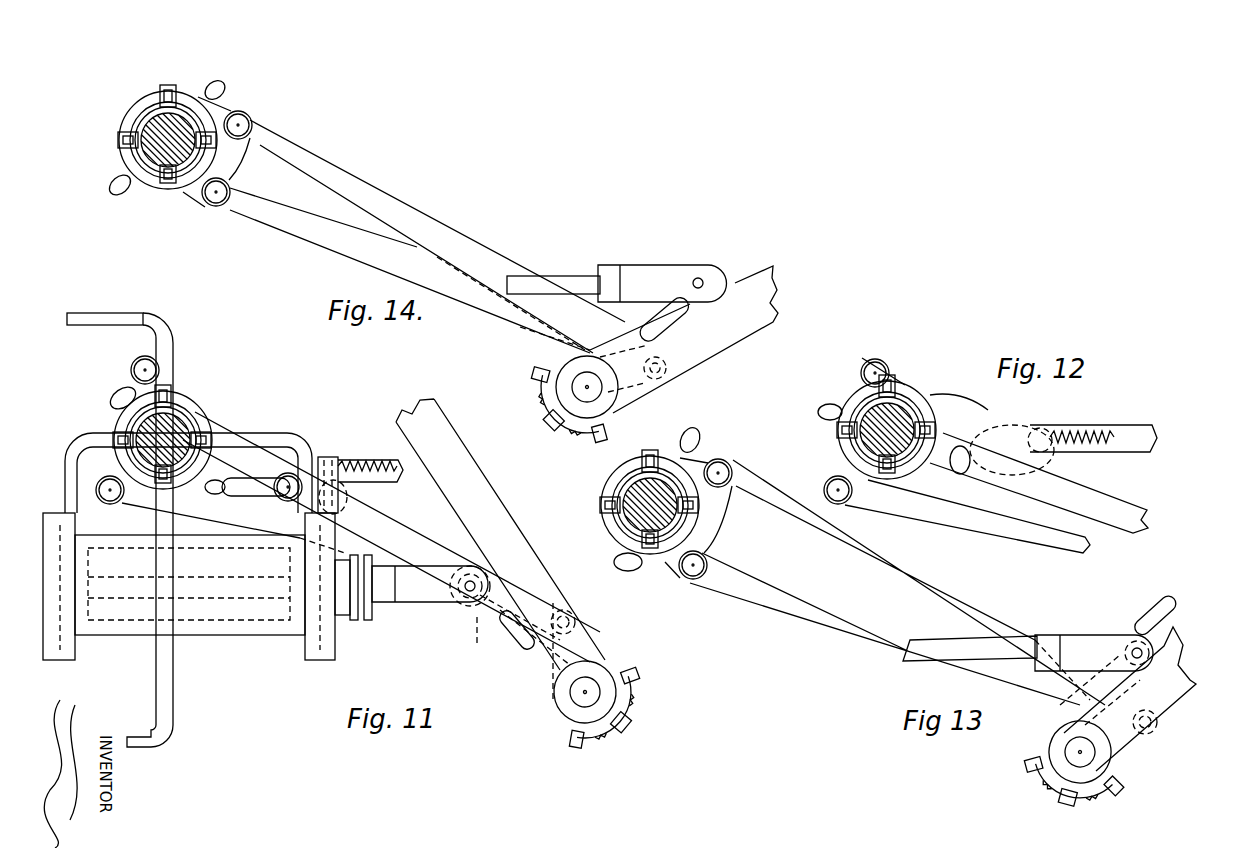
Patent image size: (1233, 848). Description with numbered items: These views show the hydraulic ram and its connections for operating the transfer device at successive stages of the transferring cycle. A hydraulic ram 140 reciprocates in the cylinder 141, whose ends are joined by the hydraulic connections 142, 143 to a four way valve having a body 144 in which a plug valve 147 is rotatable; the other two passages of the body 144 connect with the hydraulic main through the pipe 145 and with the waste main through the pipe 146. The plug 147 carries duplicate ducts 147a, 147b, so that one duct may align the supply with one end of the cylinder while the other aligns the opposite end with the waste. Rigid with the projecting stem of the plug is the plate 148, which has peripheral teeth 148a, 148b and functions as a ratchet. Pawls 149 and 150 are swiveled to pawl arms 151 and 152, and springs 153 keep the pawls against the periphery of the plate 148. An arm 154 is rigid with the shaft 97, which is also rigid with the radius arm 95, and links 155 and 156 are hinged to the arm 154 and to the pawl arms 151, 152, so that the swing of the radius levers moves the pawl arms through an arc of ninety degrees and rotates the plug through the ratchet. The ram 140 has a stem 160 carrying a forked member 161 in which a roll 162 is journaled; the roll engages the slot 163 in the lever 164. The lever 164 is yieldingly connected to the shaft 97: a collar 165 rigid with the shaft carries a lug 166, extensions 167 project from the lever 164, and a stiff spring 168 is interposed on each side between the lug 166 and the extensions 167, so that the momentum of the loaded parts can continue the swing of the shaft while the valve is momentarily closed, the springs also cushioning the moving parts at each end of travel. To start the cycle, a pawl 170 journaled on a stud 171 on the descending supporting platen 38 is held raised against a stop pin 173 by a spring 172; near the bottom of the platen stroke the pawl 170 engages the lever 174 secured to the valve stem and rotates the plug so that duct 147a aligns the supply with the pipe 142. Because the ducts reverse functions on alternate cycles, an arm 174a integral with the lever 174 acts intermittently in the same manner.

In FIG. 11, the supporting platen 38 is at (372, 463).
In FIG. 14, the radius arm 95 is at (723, 332).
In FIG. 11, the radius arm 95 is at (487, 503).
In FIG. 13, the radius arm 95 is at (1157, 730).
In FIG. 14, the shaft 97 is at (590, 400).
In FIG. 11, the shaft 97 is at (580, 693).
In FIG. 13, the shaft 97 is at (1078, 755).
In FIG. 11, the hydraulic ram 140 is at (83, 613).
In FIG. 11, the cylinder 141 is at (240, 627).
In FIG. 11, the hydraulic connection 142 is at (70, 470).
In FIG. 11, the hydraulic connection 143 is at (320, 462).
In FIG. 14, the valve body 144 is at (122, 110).
In FIG. 11, the valve body 144 is at (117, 390).
In FIG. 12, the valve body 144 is at (875, 415).
In FIG. 13, the valve body 144 is at (620, 472).
In FIG. 11, the pipe 145 is at (165, 353).
In FIG. 11, the pipe 146 is at (167, 662).
In FIG. 14, the plug valve 147 is at (128, 153).
In FIG. 11, the plug valve 147 is at (213, 410).
In FIG. 12, the plug valve 147 is at (925, 413).
In FIG. 13, the plug valve 147 is at (612, 498).
In FIG. 14, the duct 147a is at (220, 113).
In FIG. 11, the duct 147a is at (213, 403).
In FIG. 12, the duct 147a is at (930, 392).
In FIG. 13, the duct 147a is at (703, 450).
In FIG. 14, the duct 147b is at (145, 182).
In FIG. 11, the duct 147b is at (190, 478).
In FIG. 12, the duct 147b is at (913, 480).
In FIG. 13, the duct 147b is at (640, 512).
In FIG. 14, the plate 148 is at (200, 88).
In FIG. 11, the plate 148 is at (197, 383).
In FIG. 12, the plate 148 is at (957, 407).
In FIG. 13, the plate 148 is at (632, 467).
In FIG. 14, the tooth 148a is at (222, 187).
In FIG. 11, the tooth 148a is at (200, 410).
In FIG. 12, the tooth 148a is at (915, 378).
In FIG. 13, the tooth 148a is at (737, 537).
In FIG. 14, the tooth 148b is at (125, 175).
In FIG. 12, the tooth 148b is at (1035, 430).
In FIG. 13, the tooth 148b is at (605, 585).
In FIG. 14, the pawl 149 is at (245, 150).
In FIG. 11, the pawl 149 is at (197, 387).
In FIG. 12, the pawl 149 is at (895, 370).
In FIG. 13, the pawl 149 is at (718, 520).
In FIG. 14, the pawl 150 is at (207, 207).
In FIG. 11, the pawl 150 is at (115, 425).
In FIG. 12, the pawl 150 is at (838, 443).
In FIG. 13, the pawl 150 is at (683, 578).
In FIG. 14, the pawl arm 151 is at (252, 113).
In FIG. 11, the pawl arm 151 is at (135, 377).
In FIG. 12, the pawl arm 151 is at (860, 372).
In FIG. 13, the pawl arm 151 is at (723, 455).
In FIG. 14, the pawl arm 152 is at (225, 176).
In FIG. 11, the pawl arm 152 is at (122, 503).
In FIG. 12, the pawl arm 152 is at (853, 487).
In FIG. 13, the pawl arm 152 is at (700, 542).
In FIG. 14, the springs 153 is at (252, 142).
In FIG. 12, the springs 153 is at (920, 368).
In FIG. 13, the springs 153 is at (668, 573).
In FIG. 14, the arm 154 is at (662, 382).
In FIG. 11, the arm 154 is at (576, 622).
In FIG. 13, the arm 154 is at (1147, 737).
In FIG. 14, the link 155 is at (420, 220).
In FIG. 11, the link 155 is at (393, 508).
In FIG. 12, the link 155 is at (1039, 483).
In FIG. 13, the link 155 is at (905, 570).
In FIG. 14, the link 156 is at (330, 240).
In FIG. 11, the link 156 is at (353, 537).
In FIG. 12, the link 156 is at (967, 516).
In FIG. 13, the link 156 is at (803, 610).
In FIG. 14, the stem 160 is at (552, 280).
In FIG. 11, the stem 160 is at (368, 600).
In FIG. 13, the stem 160 is at (920, 653).
In FIG. 14, the forked member 161 is at (650, 268).
In FIG. 11, the forked member 161 is at (440, 603).
In FIG. 13, the forked member 161 is at (1107, 628).
In FIG. 11, the roll 162 is at (503, 627).
In FIG. 13, the roll 162 is at (1175, 622).
In FIG. 14, the slot 163 is at (690, 320).
In FIG. 11, the slot 163 is at (517, 630).
In FIG. 13, the slot 163 is at (1157, 613).
In FIG. 14, the lever 164 is at (587, 348).
In FIG. 11, the lever 164 is at (540, 690).
In FIG. 13, the lever 164 is at (1080, 712).
In FIG. 14, the collar 165 is at (550, 373).
In FIG. 11, the collar 165 is at (583, 713).
In FIG. 13, the collar 165 is at (1107, 773).
In FIG. 14, the lug 166 is at (553, 417).
In FIG. 11, the lug 166 is at (620, 723).
In FIG. 13, the lug 166 is at (1057, 798).
In FIG. 14, the extensions 167 is at (533, 385).
In FIG. 11, the extensions 167 is at (633, 693).
In FIG. 13, the extensions 167 is at (1033, 777).
In FIG. 14, the spring 168 is at (557, 437).
In FIG. 11, the spring 168 is at (533, 673).
In FIG. 13, the spring 168 is at (1047, 787).
In FIG. 11, the pawl 170 is at (252, 497).
In FIG. 12, the pawl 170 is at (1007, 470).
In FIG. 11, the stud 171 is at (278, 483).
In FIG. 12, the stud 171 is at (1040, 430).
In FIG. 11, the spring 172 is at (407, 458).
In FIG. 12, the spring 172 is at (1110, 428).
In FIG. 11, the stop pin 173 is at (343, 507).
In FIG. 14, the lever 174 is at (120, 185).
In FIG. 11, the lever 174 is at (213, 520).
In FIG. 12, the lever 174 is at (965, 474).
In FIG. 13, the lever 174 is at (615, 568).
In FIG. 14, the arm 174a is at (219, 93).
In FIG. 11, the arm 174a is at (115, 392).
In FIG. 12, the arm 174a is at (820, 411).
In FIG. 13, the arm 174a is at (683, 433).